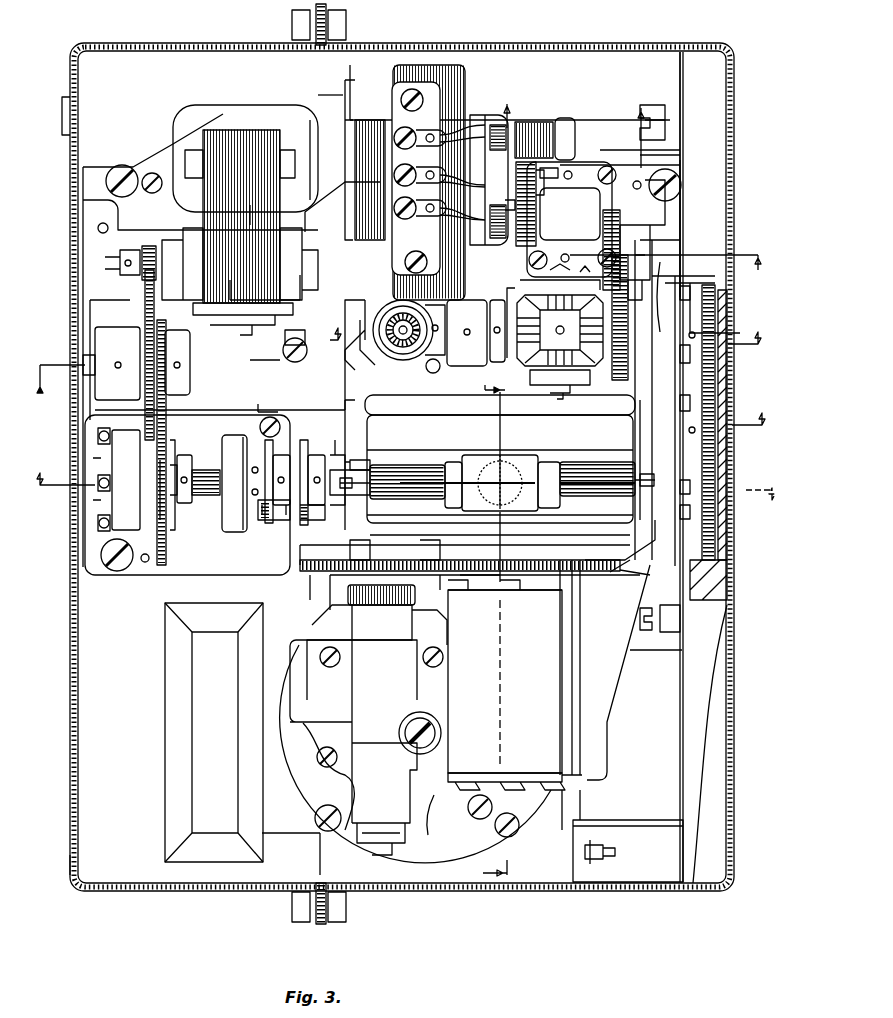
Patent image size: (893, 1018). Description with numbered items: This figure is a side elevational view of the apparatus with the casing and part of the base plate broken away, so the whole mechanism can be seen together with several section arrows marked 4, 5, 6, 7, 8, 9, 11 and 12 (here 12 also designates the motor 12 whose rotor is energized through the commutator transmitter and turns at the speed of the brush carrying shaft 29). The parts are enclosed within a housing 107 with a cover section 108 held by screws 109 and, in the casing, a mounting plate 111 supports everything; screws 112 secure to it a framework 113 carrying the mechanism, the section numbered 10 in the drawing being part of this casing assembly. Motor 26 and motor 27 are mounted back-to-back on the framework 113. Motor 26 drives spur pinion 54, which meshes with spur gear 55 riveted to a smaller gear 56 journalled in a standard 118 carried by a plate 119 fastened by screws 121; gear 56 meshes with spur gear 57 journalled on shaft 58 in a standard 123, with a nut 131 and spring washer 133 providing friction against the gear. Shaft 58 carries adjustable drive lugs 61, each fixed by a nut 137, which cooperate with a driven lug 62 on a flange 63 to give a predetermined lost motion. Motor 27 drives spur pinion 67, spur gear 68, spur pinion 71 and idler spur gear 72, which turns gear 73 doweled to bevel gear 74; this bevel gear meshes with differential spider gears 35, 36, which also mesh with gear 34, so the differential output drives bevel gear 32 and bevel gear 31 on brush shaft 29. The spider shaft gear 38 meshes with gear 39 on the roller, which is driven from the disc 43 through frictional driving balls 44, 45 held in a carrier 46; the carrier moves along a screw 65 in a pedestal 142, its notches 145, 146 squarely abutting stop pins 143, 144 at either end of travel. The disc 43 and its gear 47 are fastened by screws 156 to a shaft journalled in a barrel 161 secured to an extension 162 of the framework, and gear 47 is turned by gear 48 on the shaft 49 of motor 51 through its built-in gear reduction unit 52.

The section line 4- 4 is at (763, 486).
The section line 5- 5 is at (62, 474).
The section line 6- 6 is at (547, 327).
The section line 7- 7 is at (751, 410).
The section line 8- 8 is at (666, 272).
The section line 9- 9 is at (501, 633).
The casing 10 is at (709, 206).
The section line 11- 11 is at (576, 125).
The motor 12 is at (200, 372).
The motor 26 is at (227, 133).
The motor 27 is at (464, 69).
The brush carrying shaft 29 is at (420, 322).
The bevel gear 31 is at (402, 345).
The bevel gear 32 is at (423, 336).
The gear 34 is at (545, 307).
The differential spider gear 35 is at (538, 380).
The differential spider gear 36 is at (560, 290).
The gear 38 is at (690, 352).
The gear 39 is at (710, 462).
The disc 43 is at (502, 536).
The frictional driving ball 44 is at (350, 497).
The frictional driving ball 45 is at (510, 465).
The carrier 46 is at (475, 460).
The gear 47 is at (591, 565).
The gear 48 is at (310, 575).
The shaft 49 is at (377, 607).
The motor 51 is at (431, 843).
The gear reduction unit 52 is at (392, 687).
The spur pinion 54 is at (148, 246).
The spur gear 55 is at (144, 317).
The smaller gear 56 is at (185, 333).
The spur gear 57 is at (164, 560).
The shaft 58 is at (218, 470).
The adjustable drive lug 61 is at (278, 522).
The driven lug 62 is at (303, 520).
The flange 63 is at (336, 474).
The screw 65 is at (400, 465).
The spur pinion 67 is at (527, 166).
The spur gear 68 is at (540, 244).
The spur pinion 71 is at (603, 208).
The idler spur gear 72 is at (630, 235).
The gear 73 is at (625, 365).
The bevel gear 74 is at (620, 335).
The housing 107 is at (535, 882).
The cover section 108 is at (118, 890).
The screw 109 is at (312, 922).
The mounting plate 111 is at (720, 568).
The screw 112 is at (660, 100).
The framework 113 is at (318, 95).
The standard 118 is at (95, 345).
The plate 119 is at (256, 380).
The screw 121 is at (300, 347).
The standard 123 is at (110, 518).
The nut 131 is at (184, 521).
The spring washer 133 is at (184, 458).
The nut 137 is at (262, 466).
The pedestal 142 is at (610, 429).
The stop pin 143 is at (372, 477).
The stop pin 144 is at (622, 470).
The notch 145 is at (451, 505).
The notch 146 is at (560, 505).
The screw 156 is at (505, 595).
The barrel 161 is at (535, 699).
The extension 162 is at (620, 626).